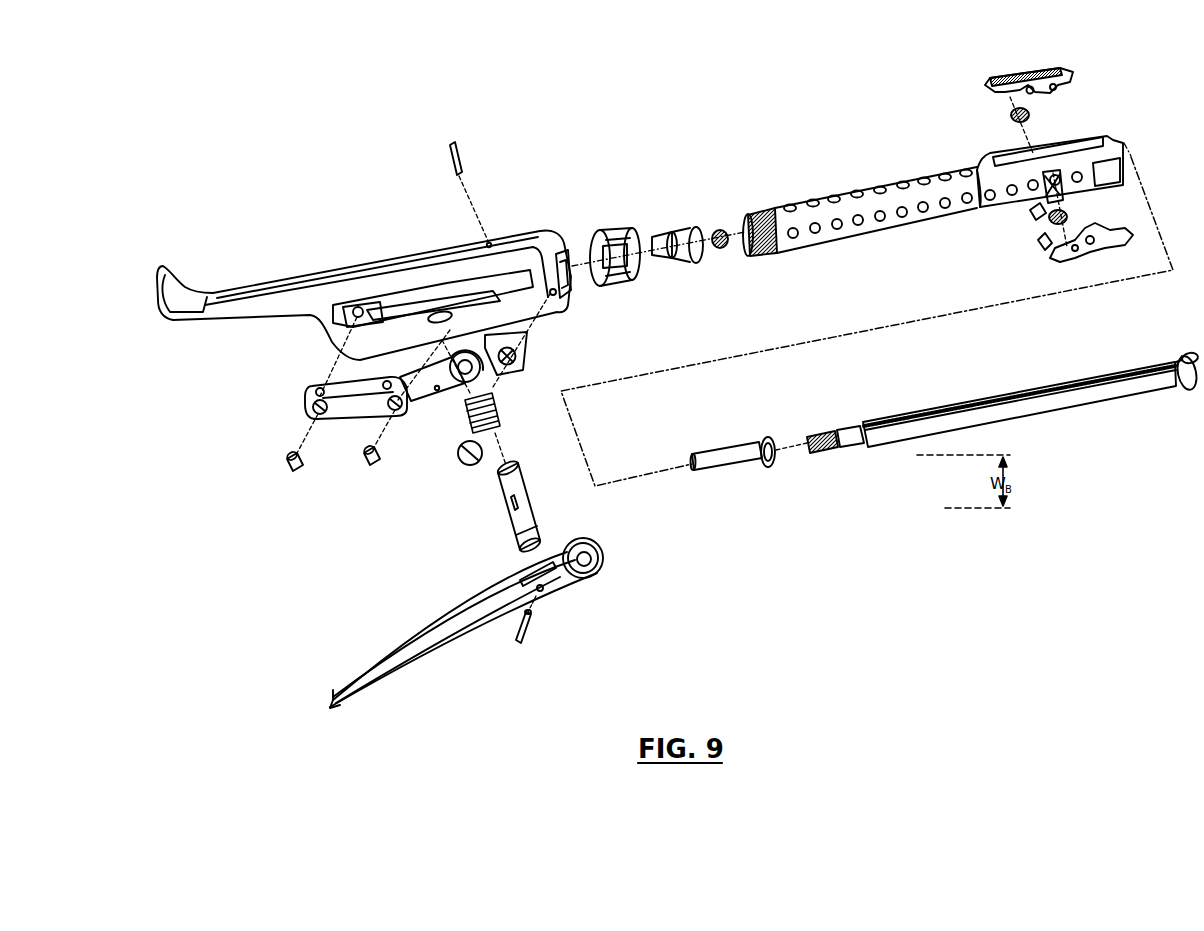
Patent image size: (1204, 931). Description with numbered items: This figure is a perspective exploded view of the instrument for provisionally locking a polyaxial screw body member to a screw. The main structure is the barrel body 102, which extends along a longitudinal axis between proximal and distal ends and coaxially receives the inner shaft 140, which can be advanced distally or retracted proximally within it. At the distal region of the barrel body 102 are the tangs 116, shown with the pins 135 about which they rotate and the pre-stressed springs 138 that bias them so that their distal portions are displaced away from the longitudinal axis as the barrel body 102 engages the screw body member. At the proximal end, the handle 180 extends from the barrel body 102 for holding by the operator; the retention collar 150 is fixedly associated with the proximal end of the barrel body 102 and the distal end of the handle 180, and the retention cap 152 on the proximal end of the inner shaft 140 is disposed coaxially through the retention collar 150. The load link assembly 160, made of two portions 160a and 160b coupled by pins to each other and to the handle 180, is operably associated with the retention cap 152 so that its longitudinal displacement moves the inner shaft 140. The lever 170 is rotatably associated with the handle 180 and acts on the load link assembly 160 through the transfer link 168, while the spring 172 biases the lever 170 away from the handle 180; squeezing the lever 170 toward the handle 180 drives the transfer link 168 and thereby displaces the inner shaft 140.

The barrel body 102 is at (870, 193).
The tangs 116 is at (1047, 83).
The pins 135 is at (1032, 213).
The springs 138 is at (1028, 115).
The inner shaft 140 is at (1020, 403).
The retention collar 150 is at (613, 230).
The retention cap 152 is at (730, 460).
The load link assembly 160 is at (280, 446).
The first portion of load link assembly 160a is at (362, 410).
The second portion of load link assembly 160b is at (440, 393).
The transfer link 168 is at (510, 520).
The lever 170 is at (375, 652).
The spring 172 is at (503, 423).
The handle 180 is at (320, 278).